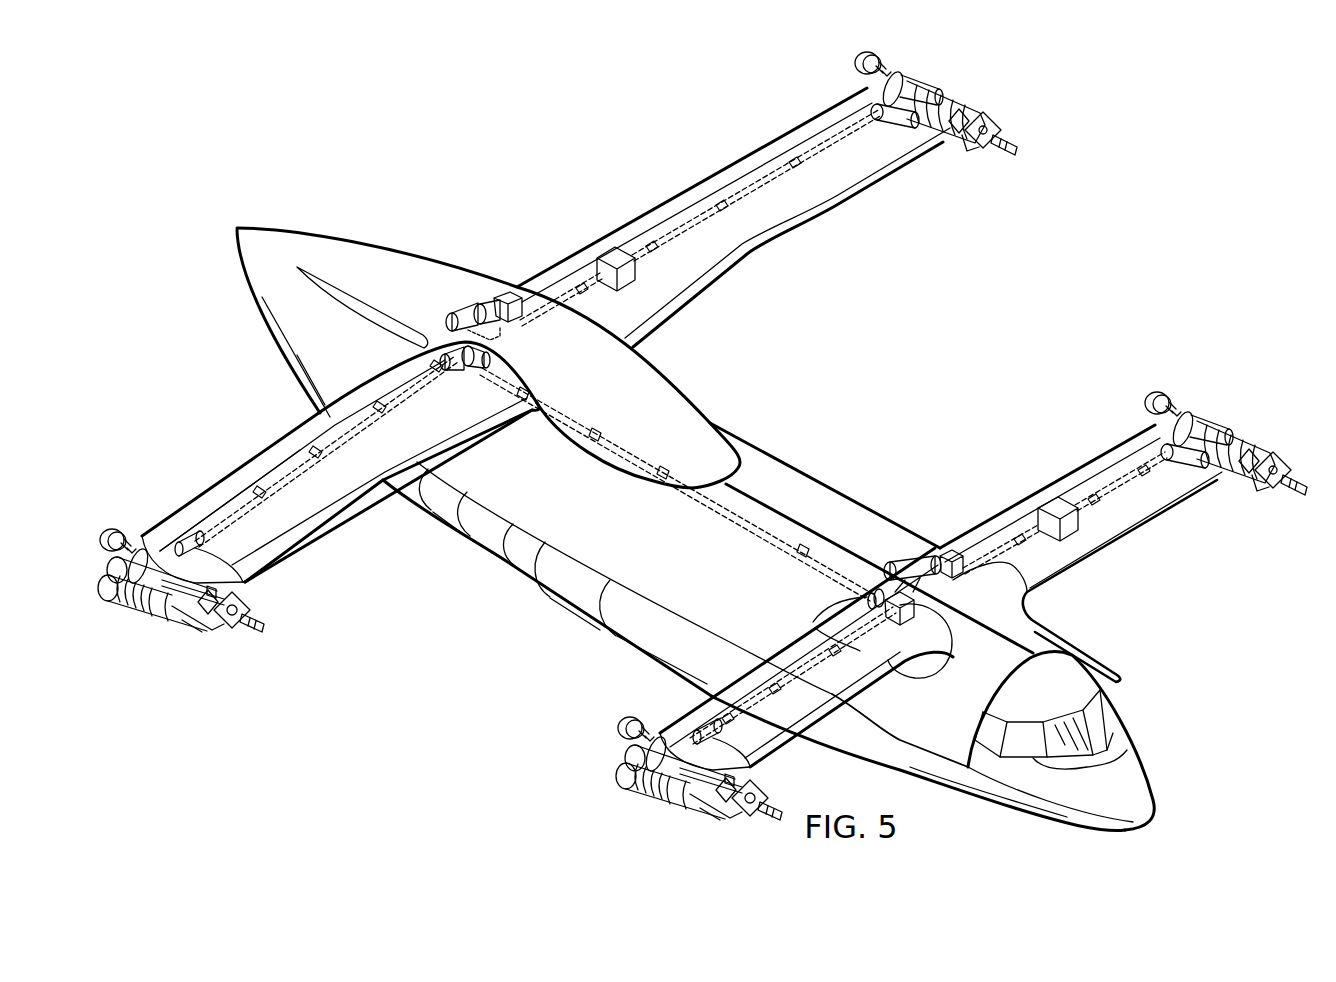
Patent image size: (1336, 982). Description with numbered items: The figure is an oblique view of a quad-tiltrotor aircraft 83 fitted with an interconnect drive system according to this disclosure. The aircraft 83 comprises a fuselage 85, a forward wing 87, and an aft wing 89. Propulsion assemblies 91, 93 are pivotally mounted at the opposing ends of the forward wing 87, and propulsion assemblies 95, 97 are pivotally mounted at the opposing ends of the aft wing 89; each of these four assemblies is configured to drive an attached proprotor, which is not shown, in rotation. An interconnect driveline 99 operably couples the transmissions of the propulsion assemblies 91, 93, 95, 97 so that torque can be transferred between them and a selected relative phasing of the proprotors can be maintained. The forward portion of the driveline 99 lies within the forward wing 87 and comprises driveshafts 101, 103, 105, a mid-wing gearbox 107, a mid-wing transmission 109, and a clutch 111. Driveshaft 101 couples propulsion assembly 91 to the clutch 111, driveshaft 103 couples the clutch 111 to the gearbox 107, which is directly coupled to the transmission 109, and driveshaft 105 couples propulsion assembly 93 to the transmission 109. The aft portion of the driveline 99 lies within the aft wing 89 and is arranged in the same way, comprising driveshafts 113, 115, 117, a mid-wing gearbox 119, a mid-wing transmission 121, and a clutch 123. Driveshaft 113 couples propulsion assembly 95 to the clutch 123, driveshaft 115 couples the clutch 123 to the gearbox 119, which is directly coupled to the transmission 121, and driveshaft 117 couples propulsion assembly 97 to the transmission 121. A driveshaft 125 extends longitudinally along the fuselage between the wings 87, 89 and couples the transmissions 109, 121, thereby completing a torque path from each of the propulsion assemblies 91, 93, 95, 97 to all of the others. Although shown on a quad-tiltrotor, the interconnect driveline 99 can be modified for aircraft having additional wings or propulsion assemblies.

The quad-tiltrotor aircraft 83 is at (1169, 150).
The fuselage 85 is at (1150, 763).
The forward wing 87 is at (1112, 549).
The aft wing 89 is at (810, 224).
The propulsion assembly 91 is at (1247, 416).
The propulsion assembly 93 is at (650, 812).
The propulsion assembly 95 is at (954, 78).
The propulsion assembly 97 is at (146, 636).
The interconnect driveline 99 is at (278, 462).
The driveshaft 101 is at (1108, 466).
The driveshaft 103 is at (995, 540).
The driveshaft 105 is at (792, 655).
The mid-wing gearbox 107 is at (903, 557).
The mid-wing transmission 109 is at (898, 630).
The clutch 111 is at (1049, 497).
The driveshaft 113 is at (687, 217).
The driveshaft 115 is at (560, 290).
The driveshaft 117 is at (226, 508).
The mid-wing gearbox 119 is at (460, 300).
The mid-wing transmission 121 is at (460, 385).
The clutch 123 is at (610, 255).
The driveshaft 125 is at (723, 518).